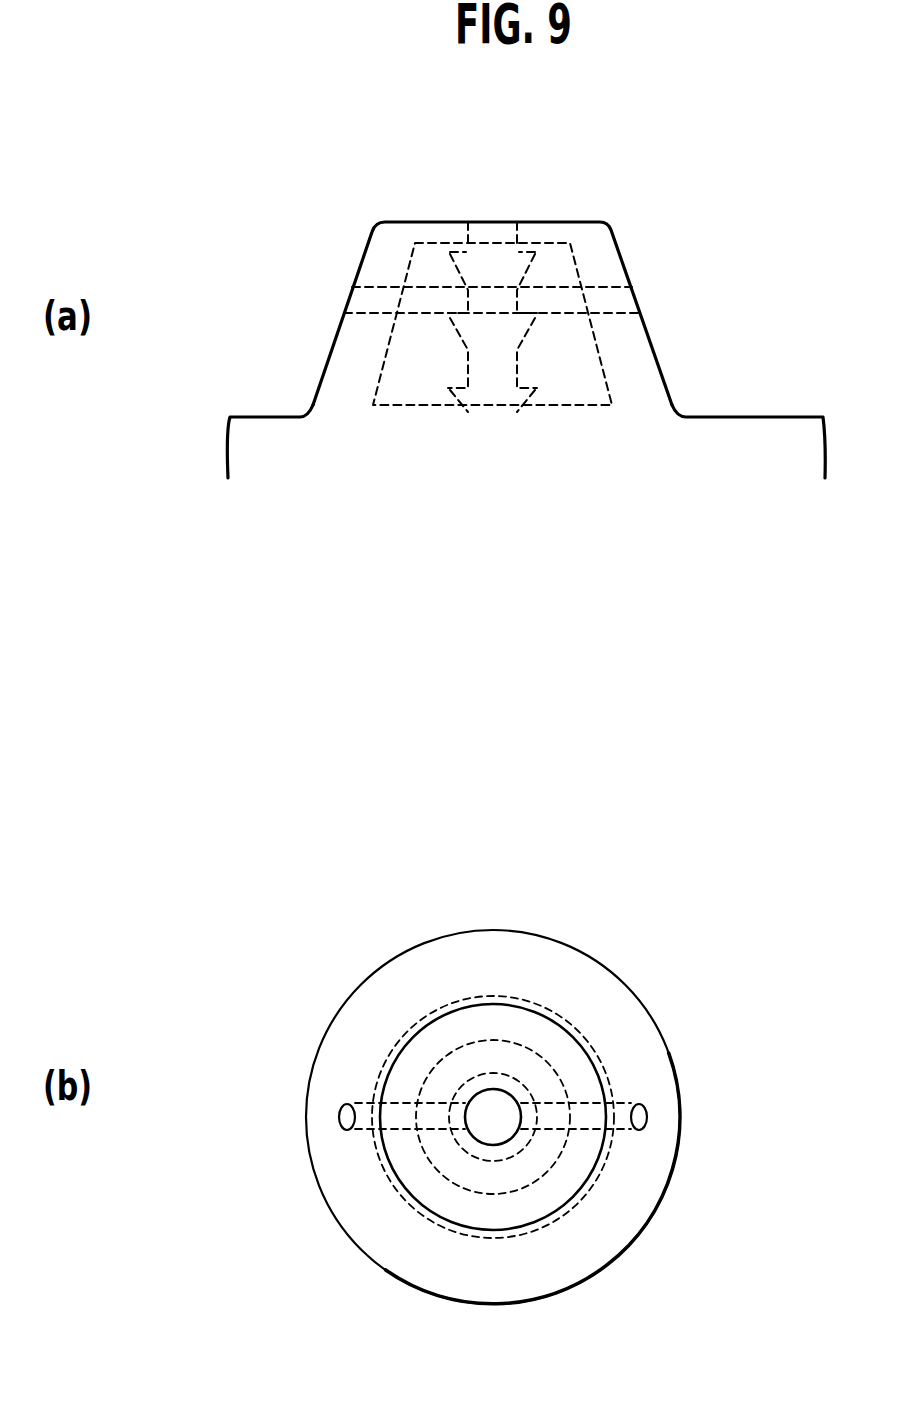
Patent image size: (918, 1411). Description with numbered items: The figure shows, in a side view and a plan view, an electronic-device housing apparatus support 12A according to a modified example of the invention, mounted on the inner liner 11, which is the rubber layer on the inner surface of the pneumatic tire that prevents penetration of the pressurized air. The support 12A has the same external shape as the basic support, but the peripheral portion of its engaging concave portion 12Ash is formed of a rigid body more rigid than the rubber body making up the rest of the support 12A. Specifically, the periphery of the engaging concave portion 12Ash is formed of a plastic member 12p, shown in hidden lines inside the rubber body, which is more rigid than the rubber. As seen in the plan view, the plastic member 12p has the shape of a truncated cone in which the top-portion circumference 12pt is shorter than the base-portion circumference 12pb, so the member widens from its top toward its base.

The electronic-device housing apparatus support 12A is at (588, 253).
The inner liner 11 is at (795, 415).
The plastic member 12p is at (597, 347).
The engaging concave portion 12Ash is at (487, 1136).
The base-portion circumference 12pb is at (608, 1085).
The top-portion circumference 12pt is at (561, 1156).